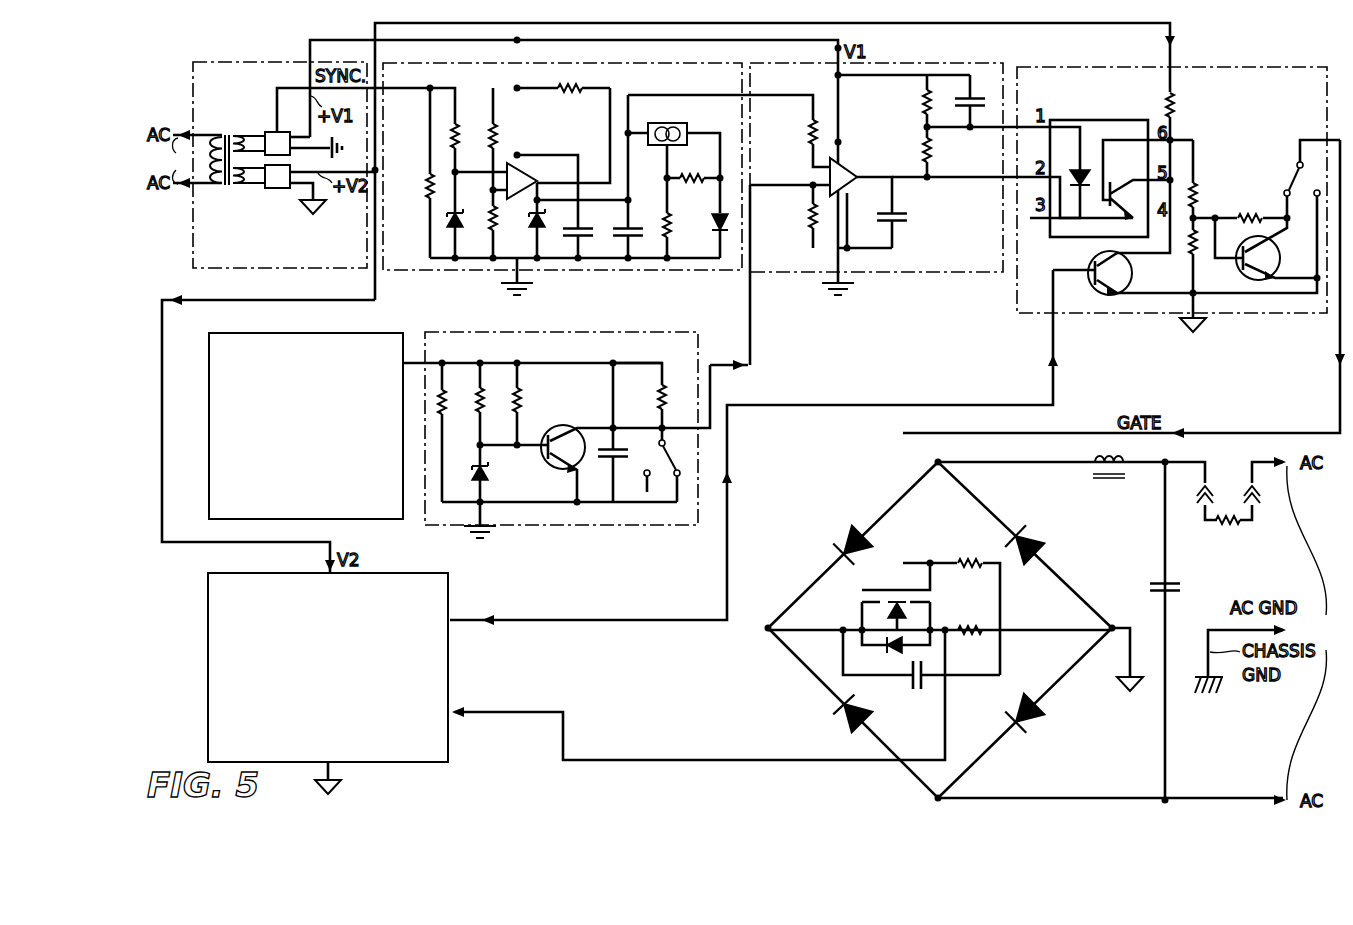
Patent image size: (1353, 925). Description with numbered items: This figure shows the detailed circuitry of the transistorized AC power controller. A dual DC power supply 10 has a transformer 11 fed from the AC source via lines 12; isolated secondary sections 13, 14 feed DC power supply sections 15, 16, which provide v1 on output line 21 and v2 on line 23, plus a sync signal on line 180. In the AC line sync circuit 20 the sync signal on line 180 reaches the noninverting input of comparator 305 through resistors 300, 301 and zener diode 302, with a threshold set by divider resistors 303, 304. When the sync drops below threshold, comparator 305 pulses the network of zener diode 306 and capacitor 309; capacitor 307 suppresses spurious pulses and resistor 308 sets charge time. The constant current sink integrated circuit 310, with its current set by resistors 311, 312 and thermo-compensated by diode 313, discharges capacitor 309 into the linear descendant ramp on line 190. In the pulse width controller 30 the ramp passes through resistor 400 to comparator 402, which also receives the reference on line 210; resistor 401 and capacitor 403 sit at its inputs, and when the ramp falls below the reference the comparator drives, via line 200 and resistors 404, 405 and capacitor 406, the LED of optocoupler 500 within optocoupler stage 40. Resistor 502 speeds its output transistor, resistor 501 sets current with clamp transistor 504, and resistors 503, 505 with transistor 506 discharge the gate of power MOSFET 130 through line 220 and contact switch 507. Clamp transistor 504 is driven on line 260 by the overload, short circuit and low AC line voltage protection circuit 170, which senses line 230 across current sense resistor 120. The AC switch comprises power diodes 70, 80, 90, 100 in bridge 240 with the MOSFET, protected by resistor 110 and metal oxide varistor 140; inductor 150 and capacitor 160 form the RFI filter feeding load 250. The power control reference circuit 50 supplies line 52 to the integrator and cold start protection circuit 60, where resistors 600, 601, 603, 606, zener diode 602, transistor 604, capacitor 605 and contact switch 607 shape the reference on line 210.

The dual DC power supply 10 is at (213, 62).
The transformer 11 is at (227, 134).
The AC source lines 12 is at (753, 465).
The secondary section 13 is at (242, 133).
The secondary section 14 is at (246, 186).
The DC power supply section 15 is at (303, 145).
The DC power supply section 16 is at (320, 189).
The AC line sync circuit 20 is at (650, 270).
The output line 21 is at (308, 37).
The line 23 is at (378, 295).
The pulse width controller 30 is at (958, 63).
The optocoupler 40 is at (1270, 67).
The power control reference circuit 50 is at (368, 333).
The line 52 is at (415, 362).
The integrator and cold start protection circuit 60 is at (585, 333).
The power diode 70 is at (1040, 532).
The power diode 80 is at (842, 533).
The power diode 90 is at (835, 720).
The power diode 100 is at (1042, 728).
The resistor 110 is at (959, 557).
The current sense resistor 120 is at (968, 622).
The power MOSFET 130 is at (887, 590).
The metal oxide varistor 140 is at (916, 690).
The inductor 150 is at (1106, 480).
The capacitor 160 is at (1155, 580).
The overload, short circuit and low AC line voltage protection circuit 170 is at (396, 573).
The sync signal line 180 is at (288, 86).
The line 190 is at (710, 94).
The line 200 is at (985, 178).
The line 210 is at (752, 318).
The line 220 is at (1250, 433).
The sensing line 230 is at (693, 760).
The bridge rectifier 240 is at (766, 625).
The load 250 is at (1244, 521).
The line 260 is at (532, 620).
The resistor 300 is at (424, 182).
The resistor 301 is at (448, 138).
The zener diode 302 is at (446, 220).
The resistor 303 is at (500, 134).
The resistor 304 is at (490, 226).
The comparator 305 is at (534, 172).
The zener diode 306 is at (548, 224).
The capacitor 307 is at (588, 235).
The resistor 308 is at (575, 94).
The capacitor 309 is at (634, 222).
The integrated circuit 310 is at (652, 122).
The resistor 311 is at (670, 226).
The resistor 312 is at (685, 176).
The diode 313 is at (712, 228).
The resistor 400 is at (808, 130).
The resistor 401 is at (808, 214).
The comparator 402 is at (848, 158).
The capacitor 403 is at (908, 217).
The resistor 404 is at (940, 150).
The resistor 405 is at (918, 102).
The capacitor 406 is at (982, 102).
The optocoupler 500 is at (1092, 120).
The resistor 501 is at (1178, 105).
The resistor 502 is at (1200, 196).
The resistor 503 is at (1192, 236).
The clamp transistor 504 is at (1128, 288).
The resistor 505 is at (1237, 212).
The transistor 506 is at (1278, 272).
The contact switch 507 is at (1283, 186).
The resistor 600 is at (447, 410).
The resistor 601 is at (488, 393).
The Zener diode 602 is at (490, 468).
The resistor 603 is at (522, 400).
The transistor 604 is at (562, 470).
The capacitor 605 is at (632, 452).
The resistor 606 is at (655, 398).
The contact switch 607 is at (656, 494).